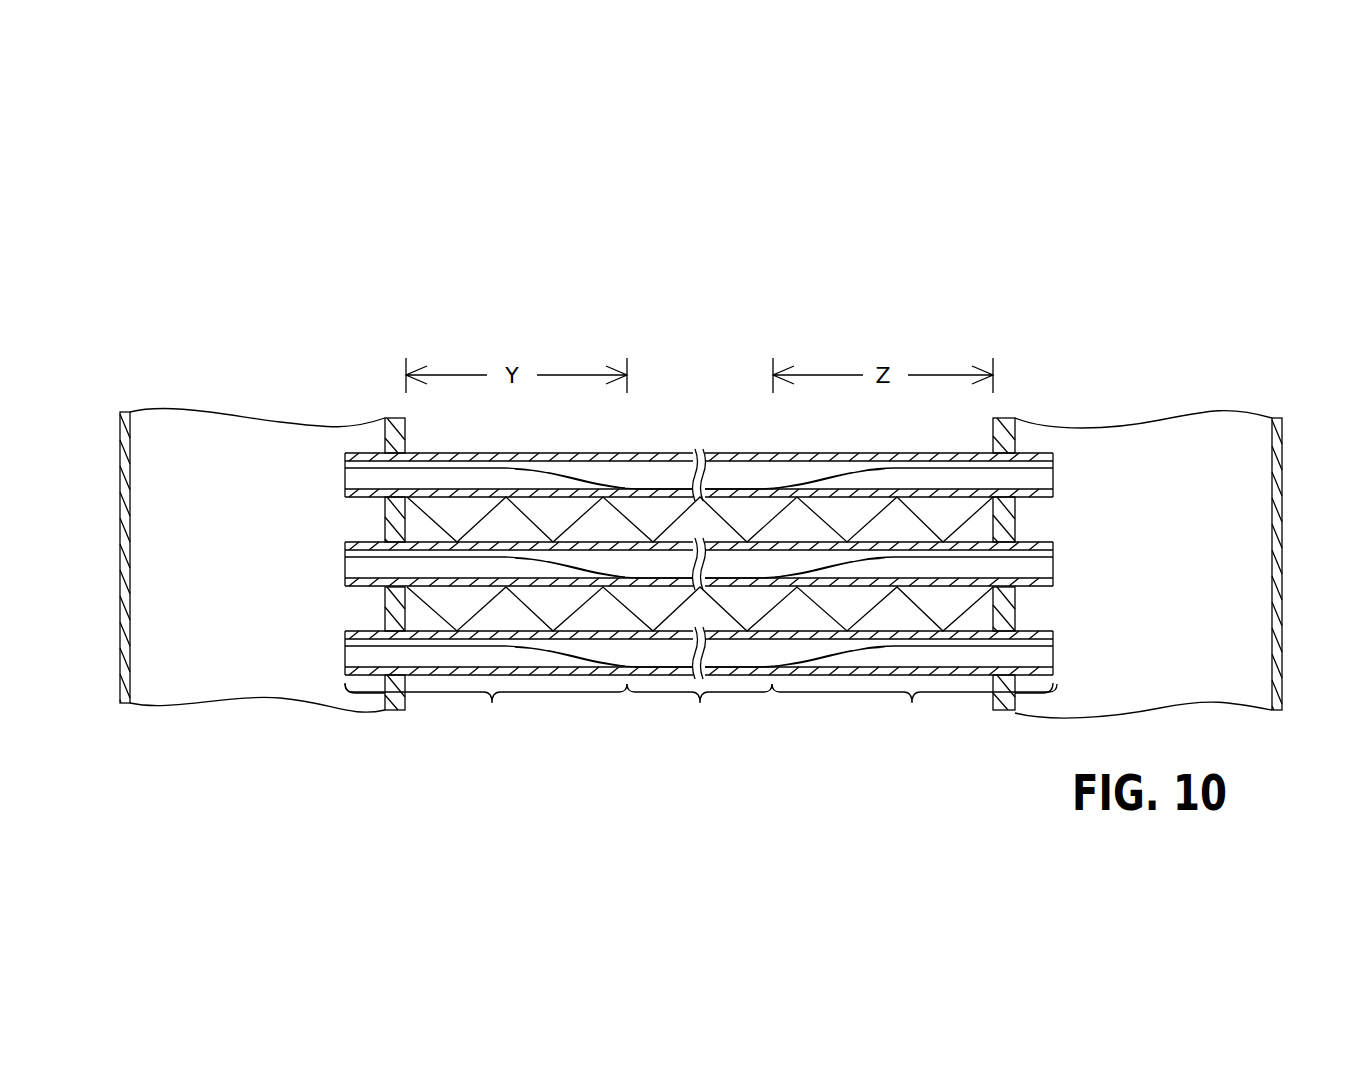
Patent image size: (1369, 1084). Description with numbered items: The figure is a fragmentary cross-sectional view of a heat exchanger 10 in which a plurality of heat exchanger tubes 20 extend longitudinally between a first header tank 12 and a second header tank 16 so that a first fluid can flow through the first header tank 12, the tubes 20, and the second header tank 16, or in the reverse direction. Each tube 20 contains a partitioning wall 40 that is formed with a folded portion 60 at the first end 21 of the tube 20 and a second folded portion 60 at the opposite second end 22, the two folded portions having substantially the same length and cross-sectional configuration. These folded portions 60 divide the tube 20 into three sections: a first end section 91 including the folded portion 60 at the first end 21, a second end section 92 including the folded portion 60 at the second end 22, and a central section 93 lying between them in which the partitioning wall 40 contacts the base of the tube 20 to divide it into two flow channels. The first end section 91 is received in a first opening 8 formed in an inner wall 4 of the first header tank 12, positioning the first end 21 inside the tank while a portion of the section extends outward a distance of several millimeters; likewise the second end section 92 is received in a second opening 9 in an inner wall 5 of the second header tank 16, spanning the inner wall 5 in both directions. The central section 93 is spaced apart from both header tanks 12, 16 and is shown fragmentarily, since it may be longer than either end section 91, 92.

The heat exchanger 10 is at (273, 297).
The first header tank 12 is at (120, 420).
The second header tank 16 is at (1282, 430).
The inner wall 4 is at (385, 597).
The inner wall 5 is at (1015, 598).
The first opening 8 is at (385, 510).
The second opening 9 is at (1015, 513).
The heat exchanger tube 20 is at (1055, 463).
The first end 21 is at (343, 473).
The second end 22 is at (1055, 490).
The partitioning wall 40 is at (638, 460).
The folded portion 60 is at (493, 457).
The first end section 91 is at (486, 714).
The second end section 92 is at (914, 717).
The central section 93 is at (699, 714).